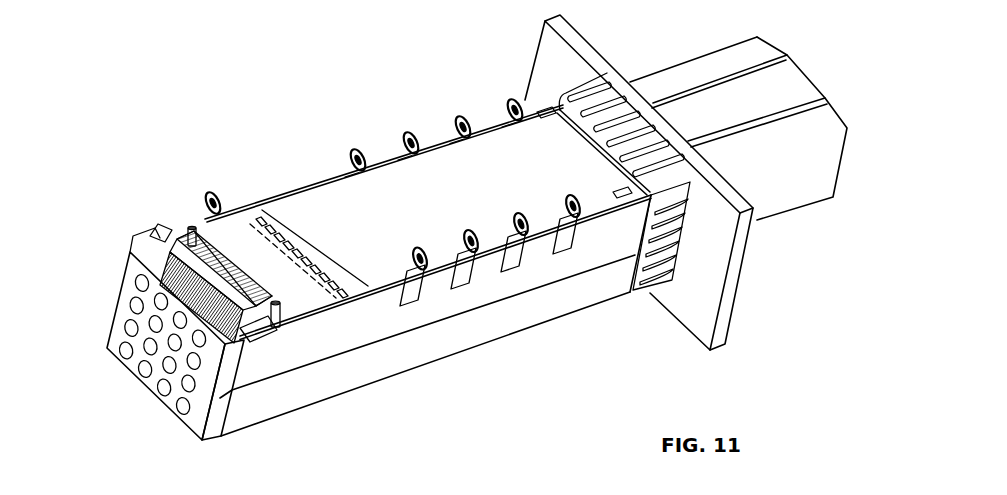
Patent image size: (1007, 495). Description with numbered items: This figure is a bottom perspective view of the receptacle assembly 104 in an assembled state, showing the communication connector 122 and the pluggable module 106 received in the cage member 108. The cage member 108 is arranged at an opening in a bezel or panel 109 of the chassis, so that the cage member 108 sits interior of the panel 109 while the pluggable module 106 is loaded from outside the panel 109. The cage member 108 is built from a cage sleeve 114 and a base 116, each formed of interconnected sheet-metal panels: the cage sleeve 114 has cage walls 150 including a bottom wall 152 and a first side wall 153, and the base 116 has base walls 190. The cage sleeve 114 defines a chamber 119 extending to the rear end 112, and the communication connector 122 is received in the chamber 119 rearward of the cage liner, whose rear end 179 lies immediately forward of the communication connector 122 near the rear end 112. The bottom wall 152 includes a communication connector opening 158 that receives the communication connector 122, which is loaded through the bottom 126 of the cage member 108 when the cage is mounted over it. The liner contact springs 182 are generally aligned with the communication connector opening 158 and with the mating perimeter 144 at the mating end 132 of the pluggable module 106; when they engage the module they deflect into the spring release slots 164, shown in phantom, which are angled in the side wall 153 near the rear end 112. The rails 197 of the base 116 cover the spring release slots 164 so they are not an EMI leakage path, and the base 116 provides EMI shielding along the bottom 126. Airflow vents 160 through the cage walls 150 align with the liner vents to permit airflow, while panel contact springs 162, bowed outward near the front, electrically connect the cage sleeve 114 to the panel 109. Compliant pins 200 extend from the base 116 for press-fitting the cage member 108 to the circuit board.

The receptacle assembly 104 is at (290, 90).
The pluggable module 106 is at (240, 216).
The cage member 108 is at (441, 366).
The panel 109 is at (696, 340).
The rear end 112 is at (158, 390).
The cage sleeve 114 is at (343, 378).
The base 116 is at (377, 325).
The chamber 119 is at (138, 249).
The communication connector 122 is at (158, 230).
The bottom 126 is at (386, 157).
The mating end 132 is at (190, 228).
The mating perimeter 144 is at (258, 228).
The cage walls 150 is at (525, 311).
The bottom wall 152 is at (302, 237).
The first side wall 153 is at (568, 300).
The communication connector opening 158 is at (278, 210).
The airflow vents 160 is at (147, 352).
The panel contact springs 162 is at (590, 88).
The spring release slots 164 is at (306, 352).
The rear end 179 is at (298, 262).
The liner contact springs 182 is at (305, 258).
The base walls 190 is at (482, 165).
The rails 197 is at (262, 368).
The compliant pins 200 is at (408, 133).